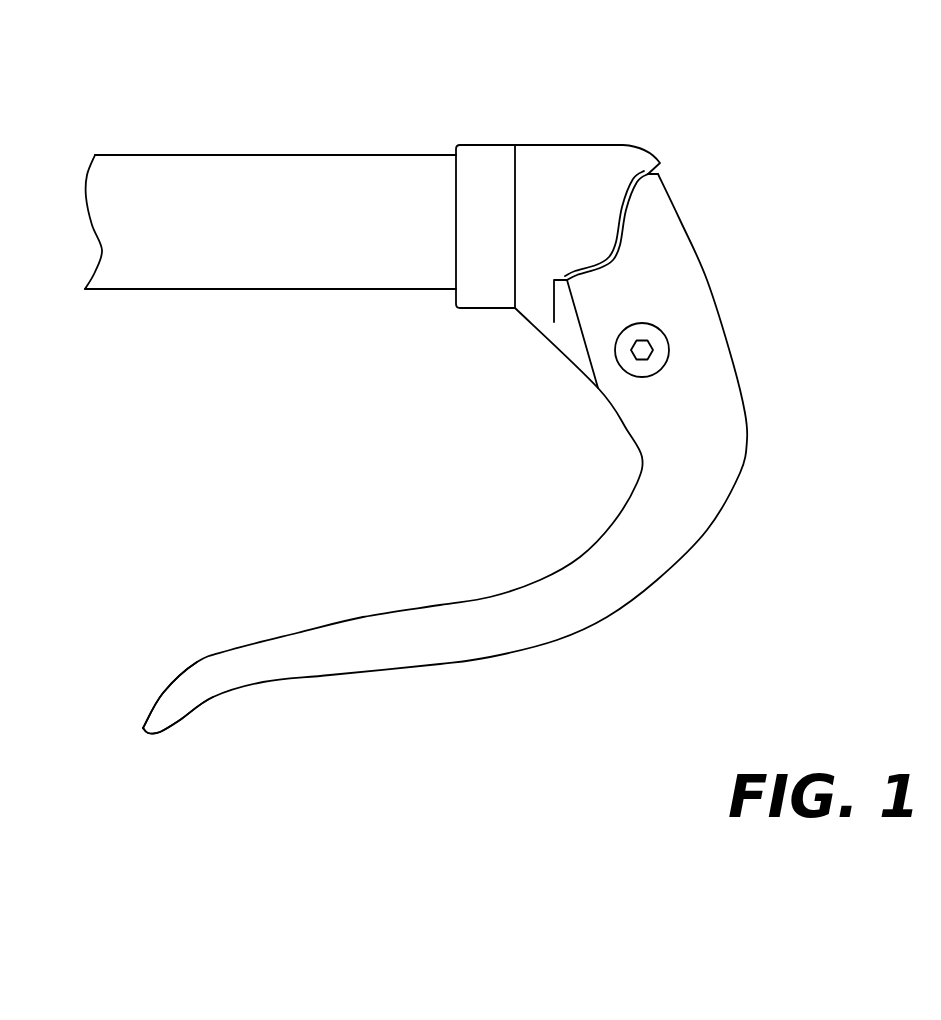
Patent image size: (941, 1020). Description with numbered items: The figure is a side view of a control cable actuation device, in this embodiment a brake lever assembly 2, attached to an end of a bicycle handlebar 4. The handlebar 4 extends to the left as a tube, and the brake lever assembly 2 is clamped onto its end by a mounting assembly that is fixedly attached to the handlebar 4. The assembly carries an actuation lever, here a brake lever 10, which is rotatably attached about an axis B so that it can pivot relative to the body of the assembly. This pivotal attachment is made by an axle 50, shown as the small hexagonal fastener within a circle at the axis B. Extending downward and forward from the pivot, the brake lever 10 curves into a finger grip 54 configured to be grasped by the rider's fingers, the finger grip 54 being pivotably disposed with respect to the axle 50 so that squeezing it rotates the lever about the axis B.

The brake lever assembly 2 is at (494, 377).
The bicycle handlebar 4 is at (233, 155).
The brake lever 10 is at (748, 430).
The axle 50 is at (704, 322).
The axis B is at (650, 342).
The finger grip 54 is at (338, 678).